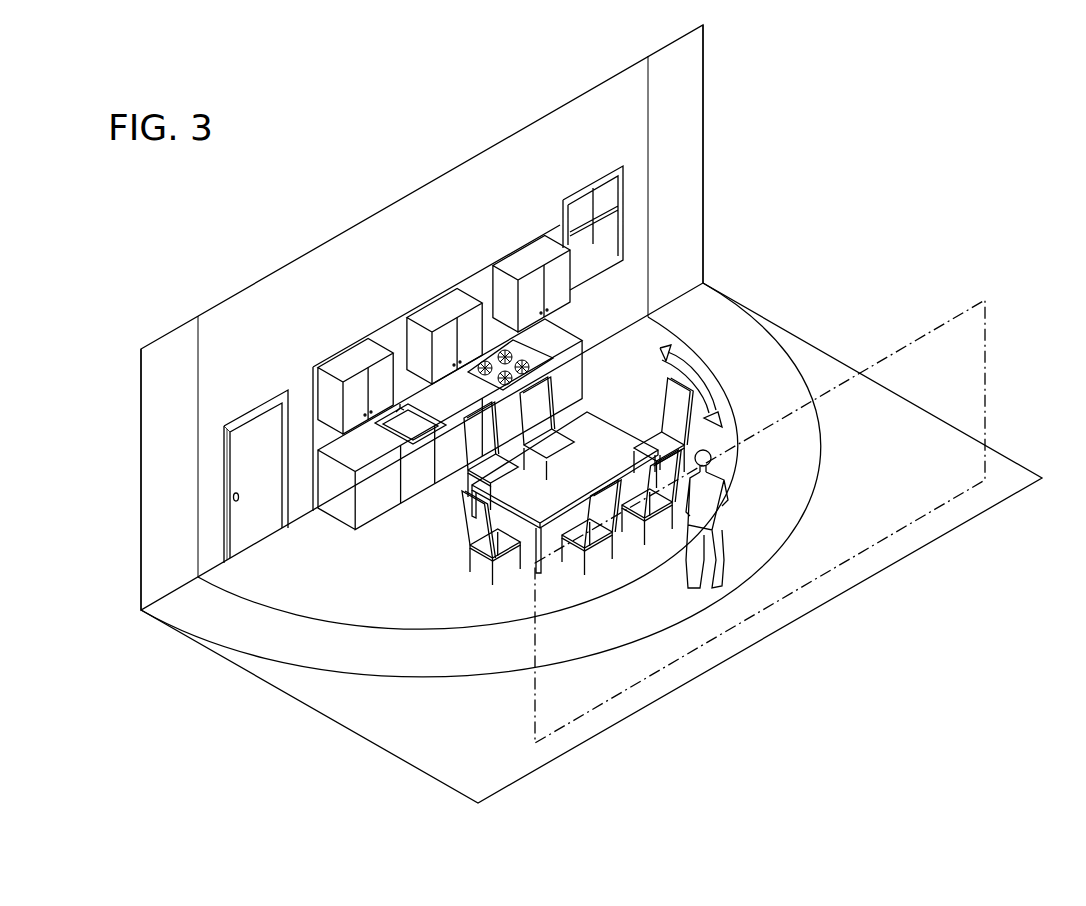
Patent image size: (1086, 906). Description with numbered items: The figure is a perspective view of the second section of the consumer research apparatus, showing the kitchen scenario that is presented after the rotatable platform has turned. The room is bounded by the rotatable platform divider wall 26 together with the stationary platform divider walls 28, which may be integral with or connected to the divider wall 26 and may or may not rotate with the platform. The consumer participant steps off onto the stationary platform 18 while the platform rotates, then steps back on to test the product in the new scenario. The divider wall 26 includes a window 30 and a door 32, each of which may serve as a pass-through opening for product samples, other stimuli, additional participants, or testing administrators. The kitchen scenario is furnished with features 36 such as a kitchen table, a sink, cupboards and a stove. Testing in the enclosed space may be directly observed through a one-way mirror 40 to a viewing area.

The stationary platform 18 is at (325, 648).
The rotatable platform divider wall 26 is at (462, 185).
The stationary platform divider walls 28 is at (175, 352).
The window 30 is at (588, 185).
The door 32 is at (252, 407).
The features 36 is at (432, 310).
The one-way mirror 40 is at (985, 353).